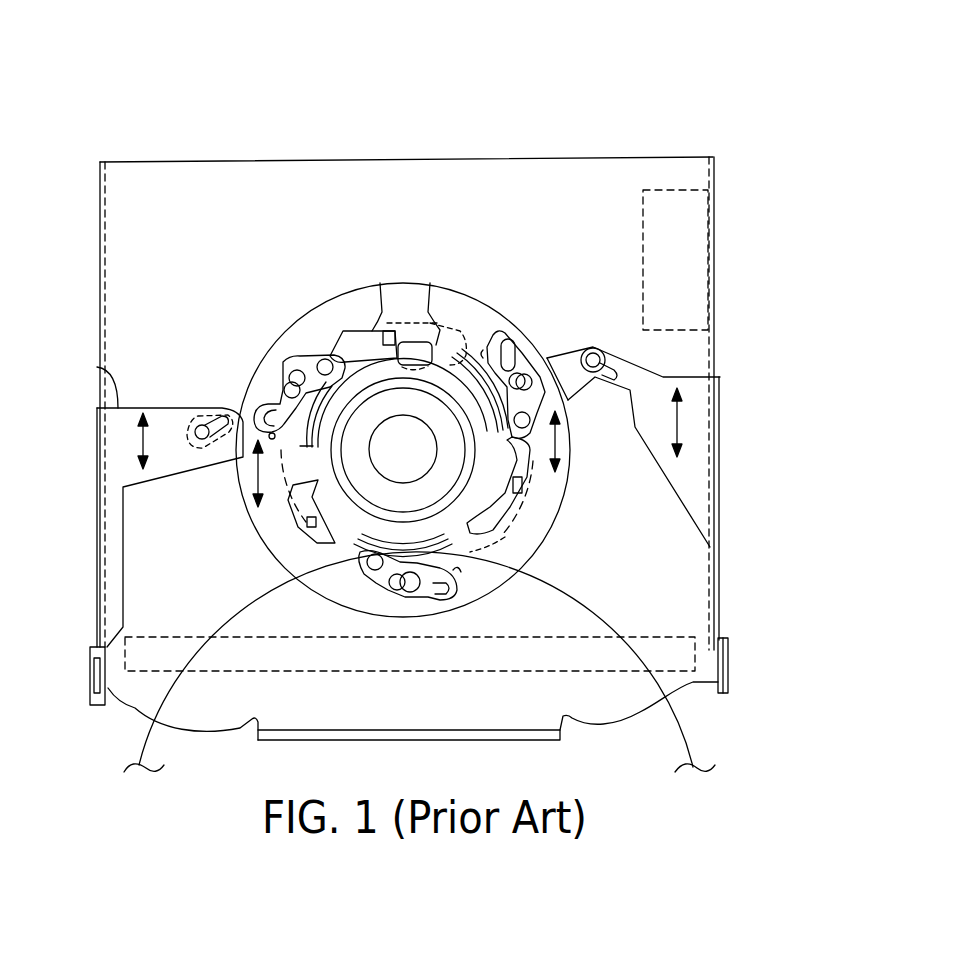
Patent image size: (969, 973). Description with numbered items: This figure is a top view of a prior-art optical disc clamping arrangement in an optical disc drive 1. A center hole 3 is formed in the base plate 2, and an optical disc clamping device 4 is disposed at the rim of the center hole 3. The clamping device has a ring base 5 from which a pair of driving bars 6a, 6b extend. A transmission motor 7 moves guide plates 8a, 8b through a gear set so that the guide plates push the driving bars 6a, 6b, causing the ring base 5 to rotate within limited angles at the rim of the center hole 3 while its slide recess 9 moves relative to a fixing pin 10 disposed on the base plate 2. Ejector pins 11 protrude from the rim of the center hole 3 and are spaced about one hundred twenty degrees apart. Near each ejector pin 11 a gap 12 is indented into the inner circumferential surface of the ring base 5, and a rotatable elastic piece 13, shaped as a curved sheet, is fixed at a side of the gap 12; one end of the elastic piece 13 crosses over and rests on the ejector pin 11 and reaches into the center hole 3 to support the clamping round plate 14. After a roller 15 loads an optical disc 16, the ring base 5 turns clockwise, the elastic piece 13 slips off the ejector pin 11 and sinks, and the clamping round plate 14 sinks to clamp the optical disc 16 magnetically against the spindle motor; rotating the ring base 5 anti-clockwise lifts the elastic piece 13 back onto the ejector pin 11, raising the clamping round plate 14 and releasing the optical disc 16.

The optical disc drive 1 is at (797, 40).
The base plate 2 is at (468, 158).
The center hole 3 is at (460, 335).
The optical disc clamping device 4 is at (290, 287).
The ring base 5 is at (540, 307).
The driving bar 6a is at (575, 350).
The driving bar 6b is at (217, 457).
The transmission motor 7 is at (673, 188).
The guide plate 8a is at (690, 373).
The guide plate 8b is at (97, 367).
The slide recess 9 is at (266, 410).
The fixing pin 10 is at (283, 368).
The ejector pin 11 is at (380, 316).
The gap 12 is at (343, 331).
The elastic piece 13 is at (437, 320).
The clamping round plate 14 is at (527, 540).
The roller 15 is at (660, 637).
The optical disc 16 is at (680, 735).